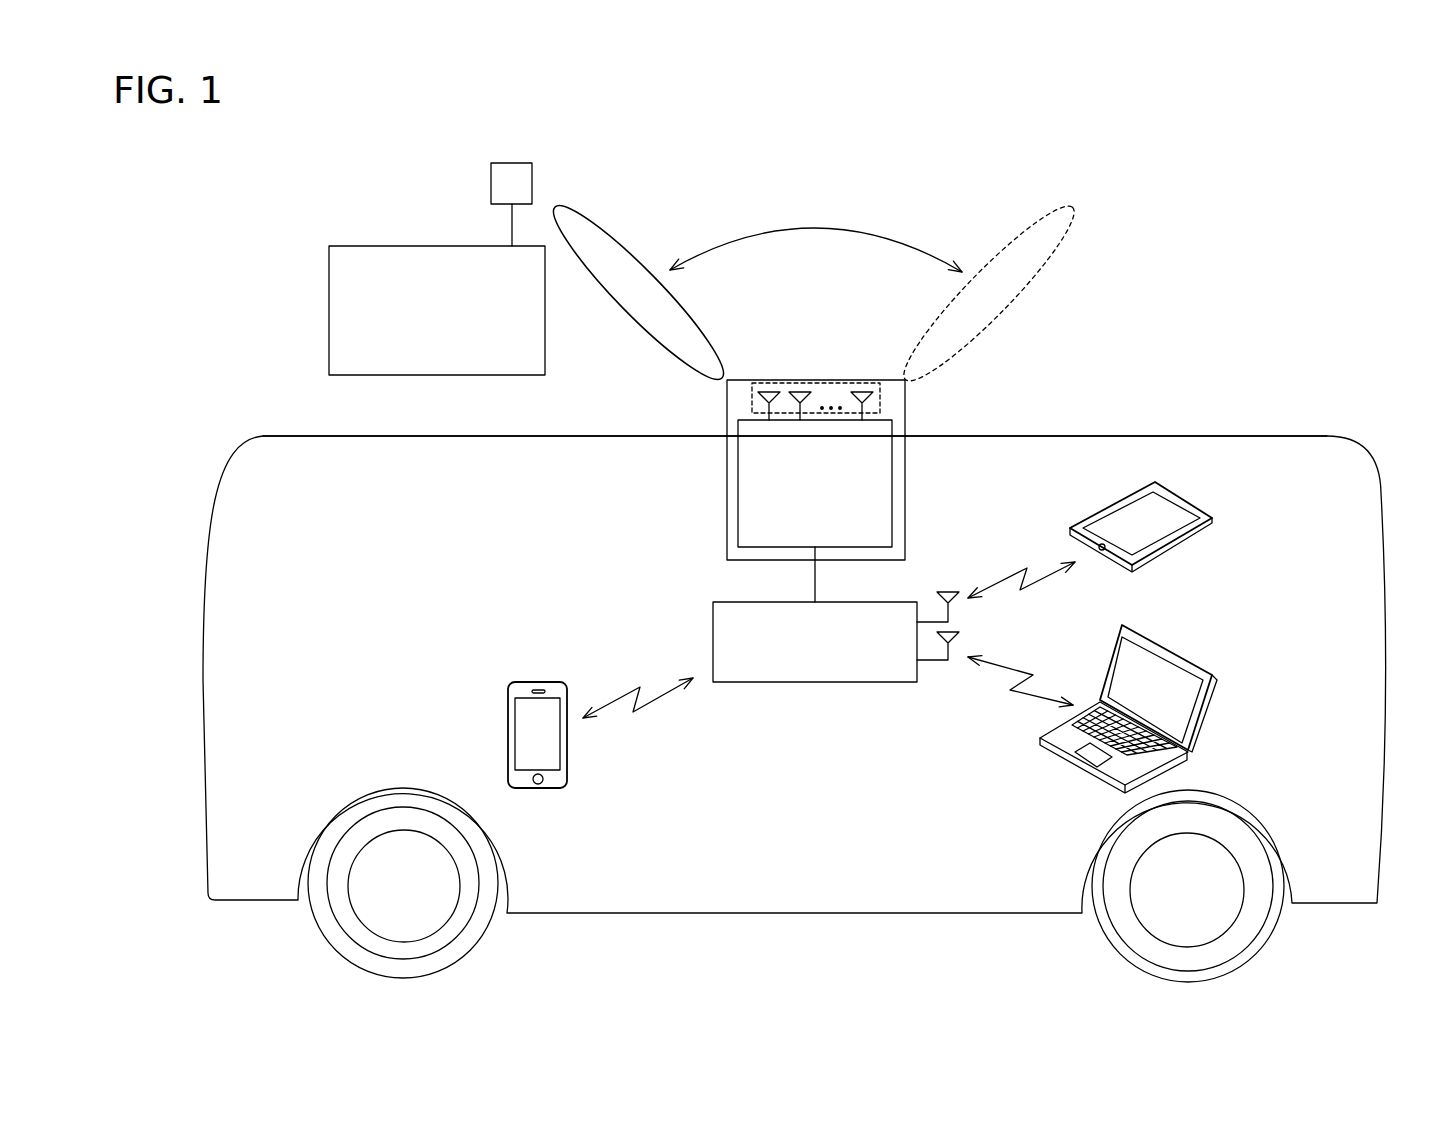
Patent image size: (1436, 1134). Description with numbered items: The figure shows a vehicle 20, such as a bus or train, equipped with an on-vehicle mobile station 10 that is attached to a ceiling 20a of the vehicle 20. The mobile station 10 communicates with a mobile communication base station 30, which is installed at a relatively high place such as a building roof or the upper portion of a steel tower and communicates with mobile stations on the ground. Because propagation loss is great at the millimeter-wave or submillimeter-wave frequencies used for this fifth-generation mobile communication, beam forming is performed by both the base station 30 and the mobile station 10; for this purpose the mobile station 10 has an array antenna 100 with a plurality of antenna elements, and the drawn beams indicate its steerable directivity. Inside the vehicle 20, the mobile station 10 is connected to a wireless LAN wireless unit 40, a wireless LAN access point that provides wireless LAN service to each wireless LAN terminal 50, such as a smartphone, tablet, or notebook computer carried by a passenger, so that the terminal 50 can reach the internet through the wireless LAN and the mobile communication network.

The mobile station 10 is at (816, 451).
The array antenna 100 is at (793, 383).
The vehicle 20 is at (1216, 436).
The ceiling 20a is at (998, 437).
The mobile communication base station 30 is at (406, 246).
The wireless LAN wireless unit 40 is at (815, 683).
The wireless LAN terminal 50 is at (538, 790).